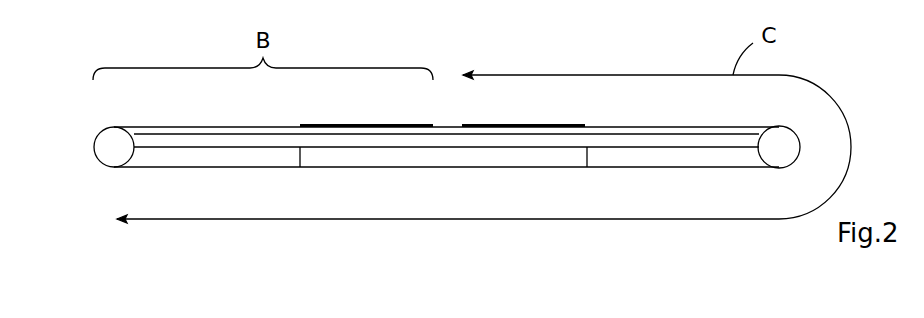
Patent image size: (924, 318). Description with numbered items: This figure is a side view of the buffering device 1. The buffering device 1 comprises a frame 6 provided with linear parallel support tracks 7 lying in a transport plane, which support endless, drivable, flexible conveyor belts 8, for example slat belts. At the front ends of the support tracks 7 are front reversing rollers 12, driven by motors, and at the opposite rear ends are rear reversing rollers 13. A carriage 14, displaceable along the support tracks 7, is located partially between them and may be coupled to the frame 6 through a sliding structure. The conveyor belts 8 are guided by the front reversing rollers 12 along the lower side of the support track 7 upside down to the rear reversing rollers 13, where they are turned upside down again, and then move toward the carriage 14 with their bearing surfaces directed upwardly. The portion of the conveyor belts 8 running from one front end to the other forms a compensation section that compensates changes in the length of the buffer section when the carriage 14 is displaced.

The buffering device 1 is at (603, 116).
The frame 6 is at (567, 124).
The support track 7 is at (670, 133).
The conveyor belt 8 is at (193, 122).
The front reversing roller 12 is at (117, 143).
The rear reversing roller 13 is at (773, 147).
The carriage 14 is at (440, 124).